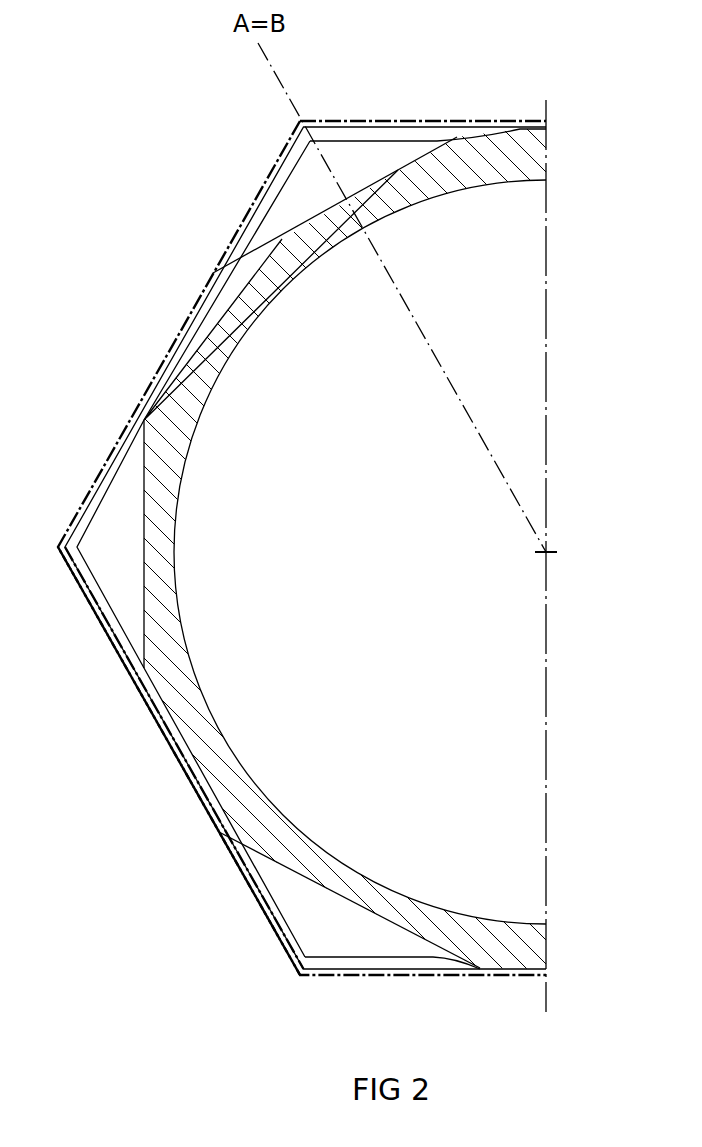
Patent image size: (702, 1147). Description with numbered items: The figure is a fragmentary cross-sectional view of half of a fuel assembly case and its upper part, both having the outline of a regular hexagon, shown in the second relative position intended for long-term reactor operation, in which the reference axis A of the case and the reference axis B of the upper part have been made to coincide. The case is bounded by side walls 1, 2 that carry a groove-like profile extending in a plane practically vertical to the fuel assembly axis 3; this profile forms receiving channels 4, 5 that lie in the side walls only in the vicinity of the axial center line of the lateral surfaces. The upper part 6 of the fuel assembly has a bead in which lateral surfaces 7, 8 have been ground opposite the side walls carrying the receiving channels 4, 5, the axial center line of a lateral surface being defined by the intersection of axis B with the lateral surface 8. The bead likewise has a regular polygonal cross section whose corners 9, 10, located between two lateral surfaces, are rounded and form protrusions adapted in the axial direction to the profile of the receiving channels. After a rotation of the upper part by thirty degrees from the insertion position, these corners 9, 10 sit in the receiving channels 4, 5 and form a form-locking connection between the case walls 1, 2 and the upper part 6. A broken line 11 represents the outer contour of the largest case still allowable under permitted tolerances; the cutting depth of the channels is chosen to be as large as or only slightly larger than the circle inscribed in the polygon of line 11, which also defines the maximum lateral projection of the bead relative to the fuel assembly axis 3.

The side wall 1 is at (344, 127).
The side wall 2 is at (270, 188).
The fuel assembly axis 3 is at (565, 528).
The receiving channel 4 is at (140, 418).
The receiving channel 5 is at (232, 836).
The upper part 6 is at (284, 272).
The lateral surface 7 is at (147, 527).
The lateral surface 8 is at (398, 168).
The corner 9 is at (511, 127).
The corner 10 is at (184, 342).
The broken line 11 is at (85, 492).